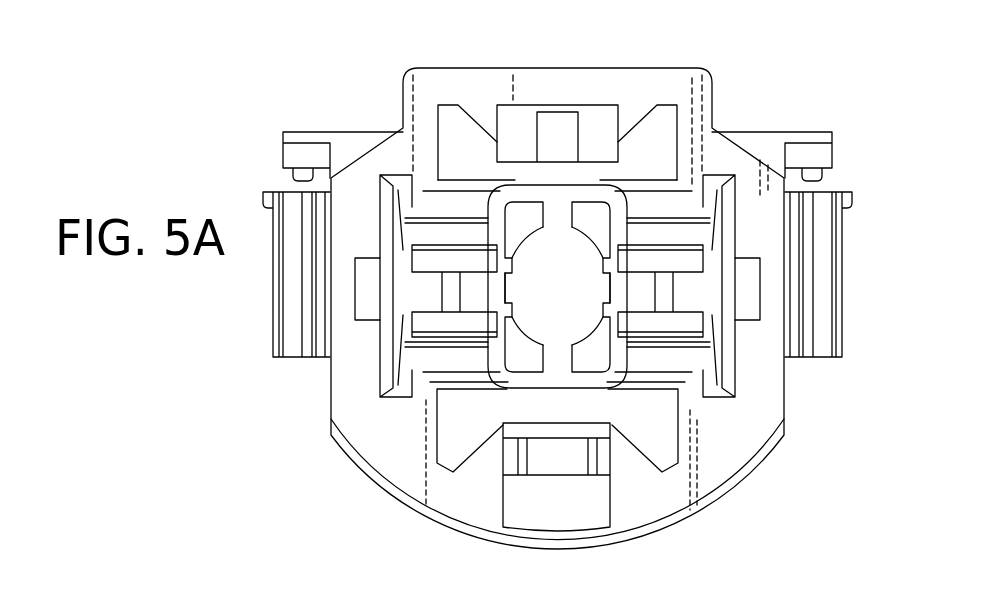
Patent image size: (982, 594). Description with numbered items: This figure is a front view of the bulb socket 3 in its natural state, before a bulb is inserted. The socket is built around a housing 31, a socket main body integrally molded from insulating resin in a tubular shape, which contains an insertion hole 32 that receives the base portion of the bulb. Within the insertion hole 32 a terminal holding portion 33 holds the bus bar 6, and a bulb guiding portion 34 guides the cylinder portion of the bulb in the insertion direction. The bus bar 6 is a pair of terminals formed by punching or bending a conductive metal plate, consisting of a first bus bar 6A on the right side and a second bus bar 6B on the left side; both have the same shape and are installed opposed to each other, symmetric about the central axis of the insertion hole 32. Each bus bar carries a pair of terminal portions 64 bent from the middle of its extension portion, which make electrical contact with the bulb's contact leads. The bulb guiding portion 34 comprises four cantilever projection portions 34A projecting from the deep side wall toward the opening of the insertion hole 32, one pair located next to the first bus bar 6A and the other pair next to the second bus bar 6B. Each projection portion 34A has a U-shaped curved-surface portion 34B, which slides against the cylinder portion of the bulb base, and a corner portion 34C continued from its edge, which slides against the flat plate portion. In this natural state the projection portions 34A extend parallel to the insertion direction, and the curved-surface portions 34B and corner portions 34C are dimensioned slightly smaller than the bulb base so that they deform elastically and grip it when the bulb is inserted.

The bulb socket 3 is at (533, 279).
The housing 31 is at (407, 68).
The insertion hole 32 is at (558, 365).
The terminal holding portion 33 is at (400, 385).
The bulb guiding portion 34 is at (557, 205).
The projection portion 34A is at (527, 203).
The curved-surface portion 34B is at (557, 286).
The corner portion 34C is at (561, 288).
The terminal portion 64 is at (417, 258).
The bus bar 6 is at (561, 264).
The first bus bar 6A is at (732, 288).
The second bus bar 6B is at (385, 288).